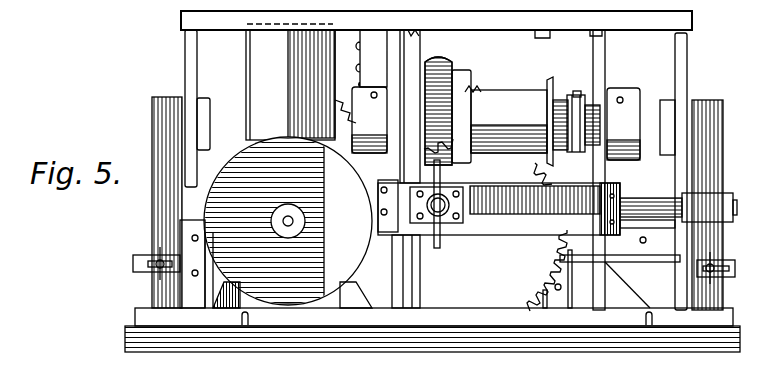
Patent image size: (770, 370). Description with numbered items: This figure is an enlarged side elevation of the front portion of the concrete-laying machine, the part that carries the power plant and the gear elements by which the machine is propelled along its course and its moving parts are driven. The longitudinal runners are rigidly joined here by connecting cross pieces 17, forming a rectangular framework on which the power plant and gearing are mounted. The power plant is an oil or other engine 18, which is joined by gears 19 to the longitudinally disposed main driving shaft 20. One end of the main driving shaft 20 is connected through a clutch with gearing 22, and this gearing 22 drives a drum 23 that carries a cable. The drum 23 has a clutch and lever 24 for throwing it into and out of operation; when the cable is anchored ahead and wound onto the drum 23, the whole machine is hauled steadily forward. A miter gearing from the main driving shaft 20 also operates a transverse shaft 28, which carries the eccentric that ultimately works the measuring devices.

The connecting cross pieces 17 is at (450, 301).
The engine 18 is at (301, 85).
The gears 19 is at (562, 245).
The main driving shaft 20 is at (445, 212).
The gearing 22 is at (455, 62).
The drum 23 is at (502, 118).
The clutch and lever 24 is at (575, 96).
The transverse shaft 28 is at (665, 172).